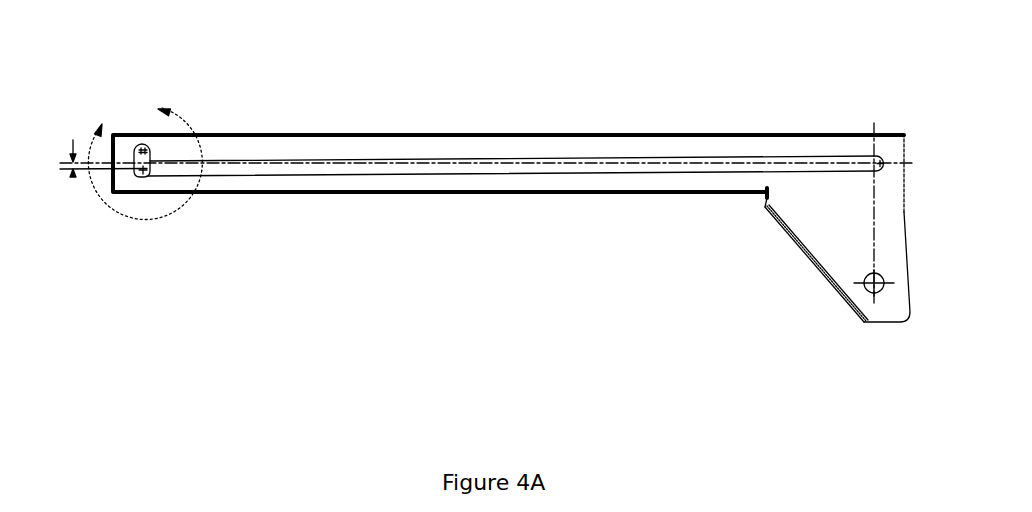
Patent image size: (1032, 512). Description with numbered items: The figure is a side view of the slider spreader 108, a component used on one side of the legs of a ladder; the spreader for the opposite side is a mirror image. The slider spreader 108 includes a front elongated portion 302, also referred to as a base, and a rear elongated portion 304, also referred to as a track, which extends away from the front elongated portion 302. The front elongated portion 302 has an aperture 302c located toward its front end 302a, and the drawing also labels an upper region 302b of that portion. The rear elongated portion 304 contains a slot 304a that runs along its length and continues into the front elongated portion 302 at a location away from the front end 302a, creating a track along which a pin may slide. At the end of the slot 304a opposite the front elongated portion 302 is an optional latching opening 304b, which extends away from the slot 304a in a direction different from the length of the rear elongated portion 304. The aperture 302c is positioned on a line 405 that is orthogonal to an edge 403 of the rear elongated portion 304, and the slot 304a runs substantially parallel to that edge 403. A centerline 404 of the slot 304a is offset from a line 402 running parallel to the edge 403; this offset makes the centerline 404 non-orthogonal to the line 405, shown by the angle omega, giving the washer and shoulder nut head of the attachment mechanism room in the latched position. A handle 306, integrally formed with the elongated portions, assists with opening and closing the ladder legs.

The slider spreader 108 is at (143, 43).
The front elongated portion 302 is at (781, 250).
The front end 302a is at (893, 325).
The upper frame portion 302b is at (870, 134).
The aperture 302c is at (866, 288).
The rear elongated portion 304 is at (452, 129).
The slot 304a is at (512, 173).
The latching opening 304b is at (152, 148).
The handle 306 is at (808, 262).
The line 402 is at (63, 157).
The edge 403 is at (325, 133).
The centerline 404 is at (73, 170).
The line 405 is at (870, 250).